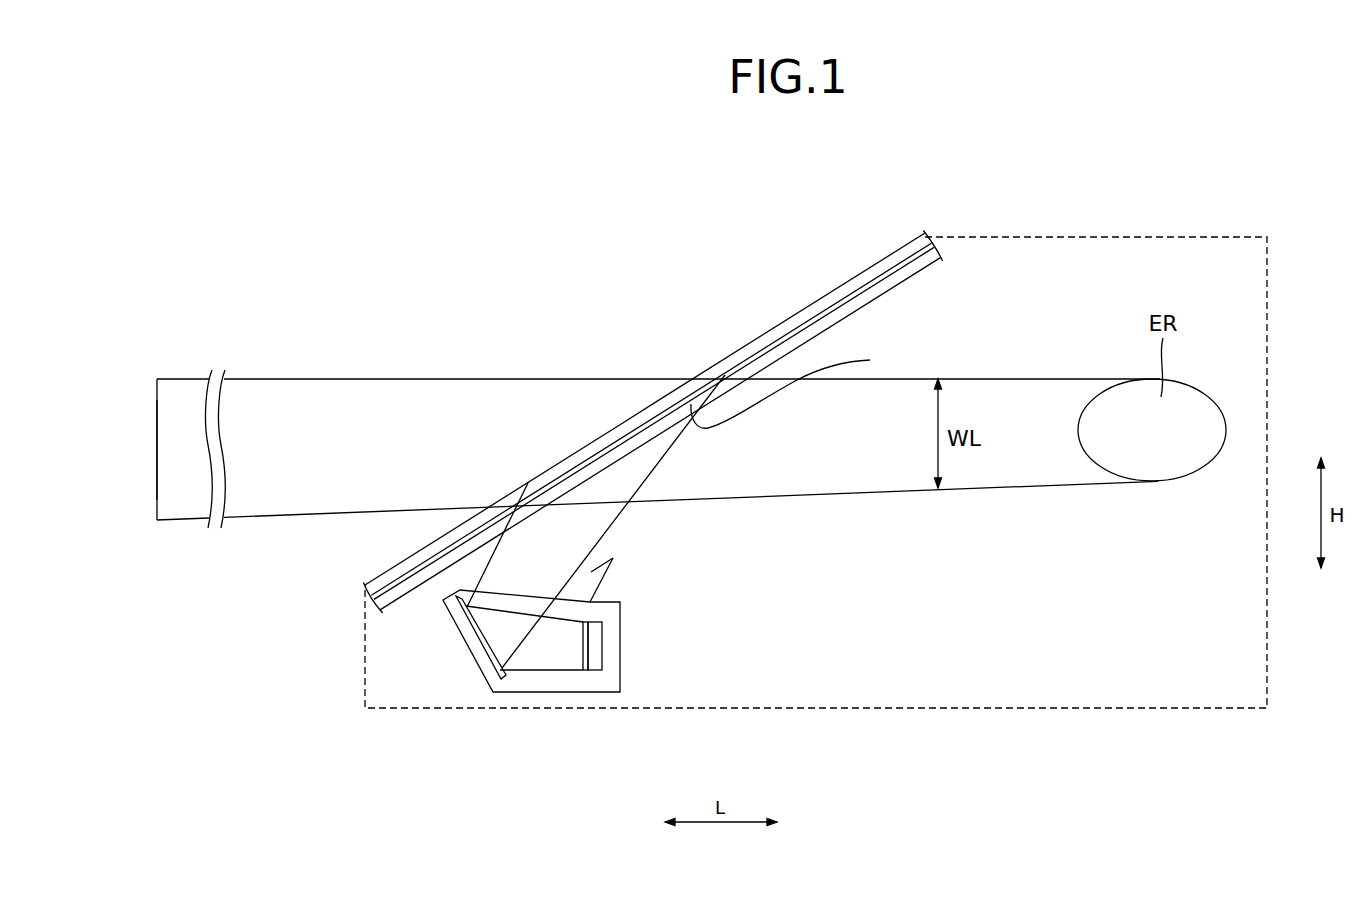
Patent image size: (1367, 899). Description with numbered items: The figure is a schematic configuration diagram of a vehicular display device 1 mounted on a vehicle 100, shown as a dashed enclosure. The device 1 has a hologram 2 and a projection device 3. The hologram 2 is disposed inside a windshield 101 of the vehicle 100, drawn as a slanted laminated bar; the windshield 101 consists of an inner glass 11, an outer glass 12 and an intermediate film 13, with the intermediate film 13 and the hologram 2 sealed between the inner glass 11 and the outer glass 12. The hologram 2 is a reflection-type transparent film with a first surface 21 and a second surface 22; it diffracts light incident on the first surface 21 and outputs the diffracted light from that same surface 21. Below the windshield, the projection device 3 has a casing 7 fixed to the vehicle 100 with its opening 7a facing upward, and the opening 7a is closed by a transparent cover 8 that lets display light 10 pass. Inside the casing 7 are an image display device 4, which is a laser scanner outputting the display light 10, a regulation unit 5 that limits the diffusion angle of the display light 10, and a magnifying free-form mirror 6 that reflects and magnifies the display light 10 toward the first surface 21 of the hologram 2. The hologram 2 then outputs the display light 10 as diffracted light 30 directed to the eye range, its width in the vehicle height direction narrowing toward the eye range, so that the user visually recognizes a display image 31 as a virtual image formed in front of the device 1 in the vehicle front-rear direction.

The vehicular display device 1 is at (602, 324).
The hologram 2 is at (655, 404).
The projection device 3 is at (469, 578).
The image display device 4 is at (595, 657).
The regulation unit 5 is at (583, 671).
The mirror 6 is at (487, 657).
The casing 7 is at (622, 643).
The opening 7a is at (612, 560).
The cover 8 is at (600, 580).
The display light 10 is at (625, 520).
The inner glass 11 is at (908, 278).
The outer glass 12 is at (905, 258).
The intermediate film 13 is at (869, 282).
The first surface 21 is at (795, 389).
The second surface 22 is at (640, 417).
The diffracted light 30 is at (1074, 377).
The display image 31 is at (157, 438).
The vehicle 100 is at (1212, 237).
The windshield 101 is at (814, 295).